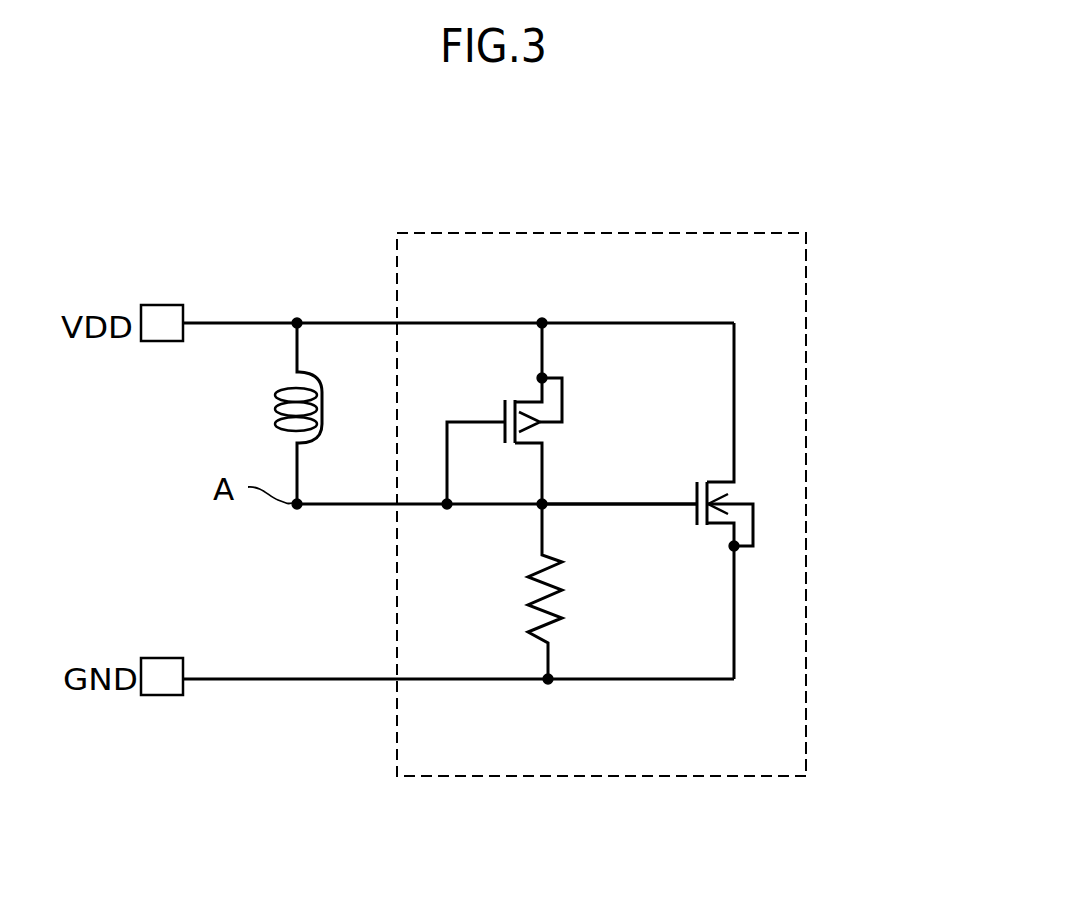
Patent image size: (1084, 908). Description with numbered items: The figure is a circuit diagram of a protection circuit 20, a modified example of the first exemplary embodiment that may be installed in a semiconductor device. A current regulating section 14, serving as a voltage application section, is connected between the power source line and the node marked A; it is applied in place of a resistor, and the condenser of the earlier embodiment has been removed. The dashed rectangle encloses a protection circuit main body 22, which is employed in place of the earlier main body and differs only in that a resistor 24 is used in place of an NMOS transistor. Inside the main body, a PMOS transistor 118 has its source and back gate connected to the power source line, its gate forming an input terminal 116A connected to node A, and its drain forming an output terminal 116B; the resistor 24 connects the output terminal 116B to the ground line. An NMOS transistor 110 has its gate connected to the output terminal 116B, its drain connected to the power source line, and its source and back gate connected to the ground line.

The current regulating section 14 is at (280, 390).
The protection circuit 20 is at (838, 287).
The protection circuit main body 22 is at (808, 395).
The resistor 24 is at (553, 607).
The NMOS transistor 110 is at (747, 487).
The input terminal 116A is at (449, 507).
The output terminal 116B is at (545, 500).
The PMOS transistor 118 is at (566, 391).